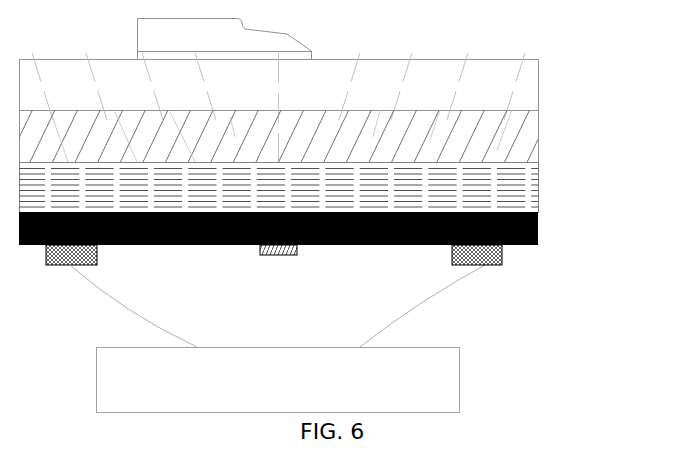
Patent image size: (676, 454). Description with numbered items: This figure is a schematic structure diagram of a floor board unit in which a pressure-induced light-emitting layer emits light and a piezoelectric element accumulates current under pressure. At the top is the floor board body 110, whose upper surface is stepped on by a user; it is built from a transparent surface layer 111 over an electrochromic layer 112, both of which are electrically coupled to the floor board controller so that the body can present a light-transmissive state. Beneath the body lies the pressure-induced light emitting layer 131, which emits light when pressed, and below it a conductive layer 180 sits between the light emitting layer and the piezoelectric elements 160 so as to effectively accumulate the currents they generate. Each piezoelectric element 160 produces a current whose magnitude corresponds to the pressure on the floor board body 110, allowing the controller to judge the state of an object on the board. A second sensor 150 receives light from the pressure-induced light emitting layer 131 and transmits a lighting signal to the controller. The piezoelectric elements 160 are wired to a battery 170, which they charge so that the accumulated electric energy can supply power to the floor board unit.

The floor board body 110 is at (321, 108).
The transparent surface layer 111 is at (538, 95).
The electrochromic layer 112 is at (538, 145).
The pressure-induced light emitting layer 131 is at (538, 190).
The conductive layer 180 is at (538, 218).
The piezoelectric element 160 is at (502, 256).
The second sensor 150 is at (277, 255).
The battery 170 is at (459, 380).